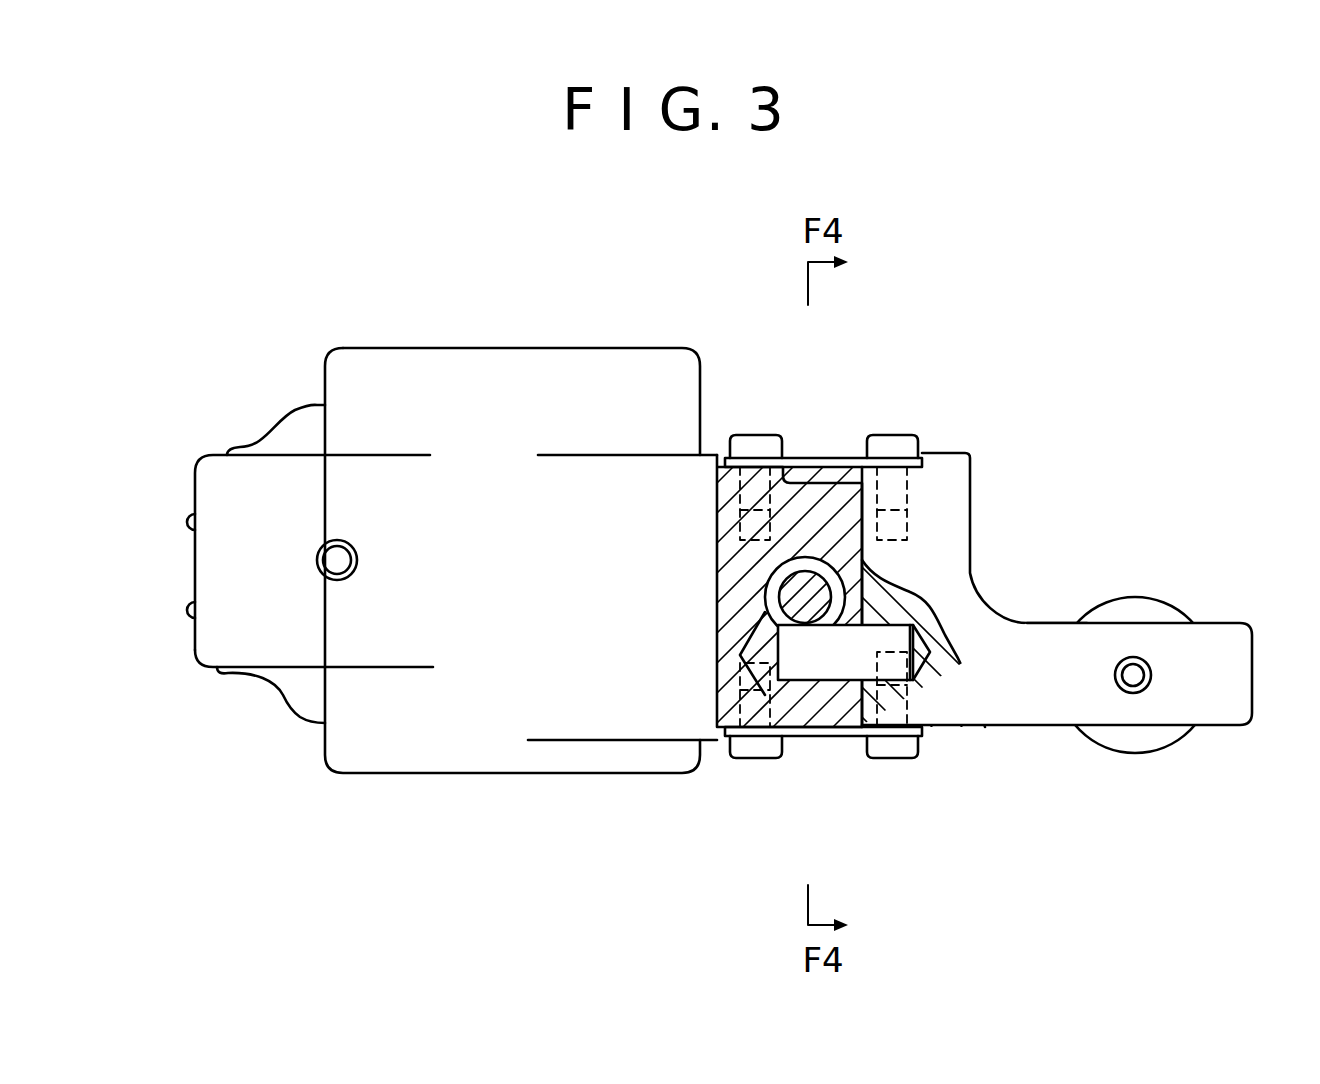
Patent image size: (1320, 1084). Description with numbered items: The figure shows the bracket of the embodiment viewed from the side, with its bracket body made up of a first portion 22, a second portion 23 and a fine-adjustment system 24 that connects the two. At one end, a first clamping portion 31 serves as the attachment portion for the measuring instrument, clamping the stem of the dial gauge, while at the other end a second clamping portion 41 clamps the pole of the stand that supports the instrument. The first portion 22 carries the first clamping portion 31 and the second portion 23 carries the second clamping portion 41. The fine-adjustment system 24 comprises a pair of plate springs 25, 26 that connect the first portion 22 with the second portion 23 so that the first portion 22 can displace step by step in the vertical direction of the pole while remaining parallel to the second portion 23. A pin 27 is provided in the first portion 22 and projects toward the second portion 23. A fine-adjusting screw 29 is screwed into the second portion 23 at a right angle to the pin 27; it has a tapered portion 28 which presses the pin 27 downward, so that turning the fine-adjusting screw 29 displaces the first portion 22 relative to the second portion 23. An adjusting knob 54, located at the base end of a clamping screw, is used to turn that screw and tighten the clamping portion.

The first portion 22 is at (1057, 705).
The second portion 23 is at (375, 765).
The fine-adjustment system 24 is at (901, 357).
The plate spring 25 is at (822, 458).
The plate spring 26 is at (832, 736).
The pin 27 is at (817, 673).
The tapered portion 28 is at (845, 578).
The fine-adjusting screw 29 is at (900, 622).
The first clamping portion 31 is at (1249, 515).
The second clamping portion 41 is at (234, 372).
The adjusting knob 54 is at (1168, 742).